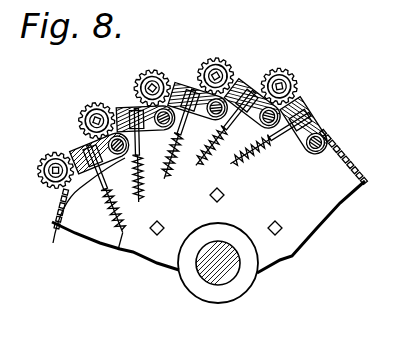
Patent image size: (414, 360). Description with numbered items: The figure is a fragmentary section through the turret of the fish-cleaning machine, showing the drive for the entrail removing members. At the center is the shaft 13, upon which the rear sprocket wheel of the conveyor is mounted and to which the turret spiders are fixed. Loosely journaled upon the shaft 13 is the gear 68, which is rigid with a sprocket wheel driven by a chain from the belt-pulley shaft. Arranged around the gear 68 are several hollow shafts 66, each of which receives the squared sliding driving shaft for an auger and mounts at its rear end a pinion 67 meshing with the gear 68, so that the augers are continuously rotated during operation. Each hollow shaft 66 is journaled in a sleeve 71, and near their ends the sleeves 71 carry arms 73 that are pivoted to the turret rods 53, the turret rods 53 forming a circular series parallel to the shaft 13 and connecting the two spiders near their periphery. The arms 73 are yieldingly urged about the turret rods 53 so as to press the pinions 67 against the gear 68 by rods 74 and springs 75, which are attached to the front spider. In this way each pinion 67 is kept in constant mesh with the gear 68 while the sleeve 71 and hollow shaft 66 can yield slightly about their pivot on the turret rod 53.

The shaft 13 is at (208, 272).
The turret rods 53 is at (310, 118).
The shaft 66 is at (228, 68).
The pinion 67 is at (42, 160).
The gear 68 is at (305, 227).
The sleeve 71 is at (158, 73).
The arms 73 is at (90, 157).
The rods 74 is at (117, 251).
The springs 75 is at (105, 206).